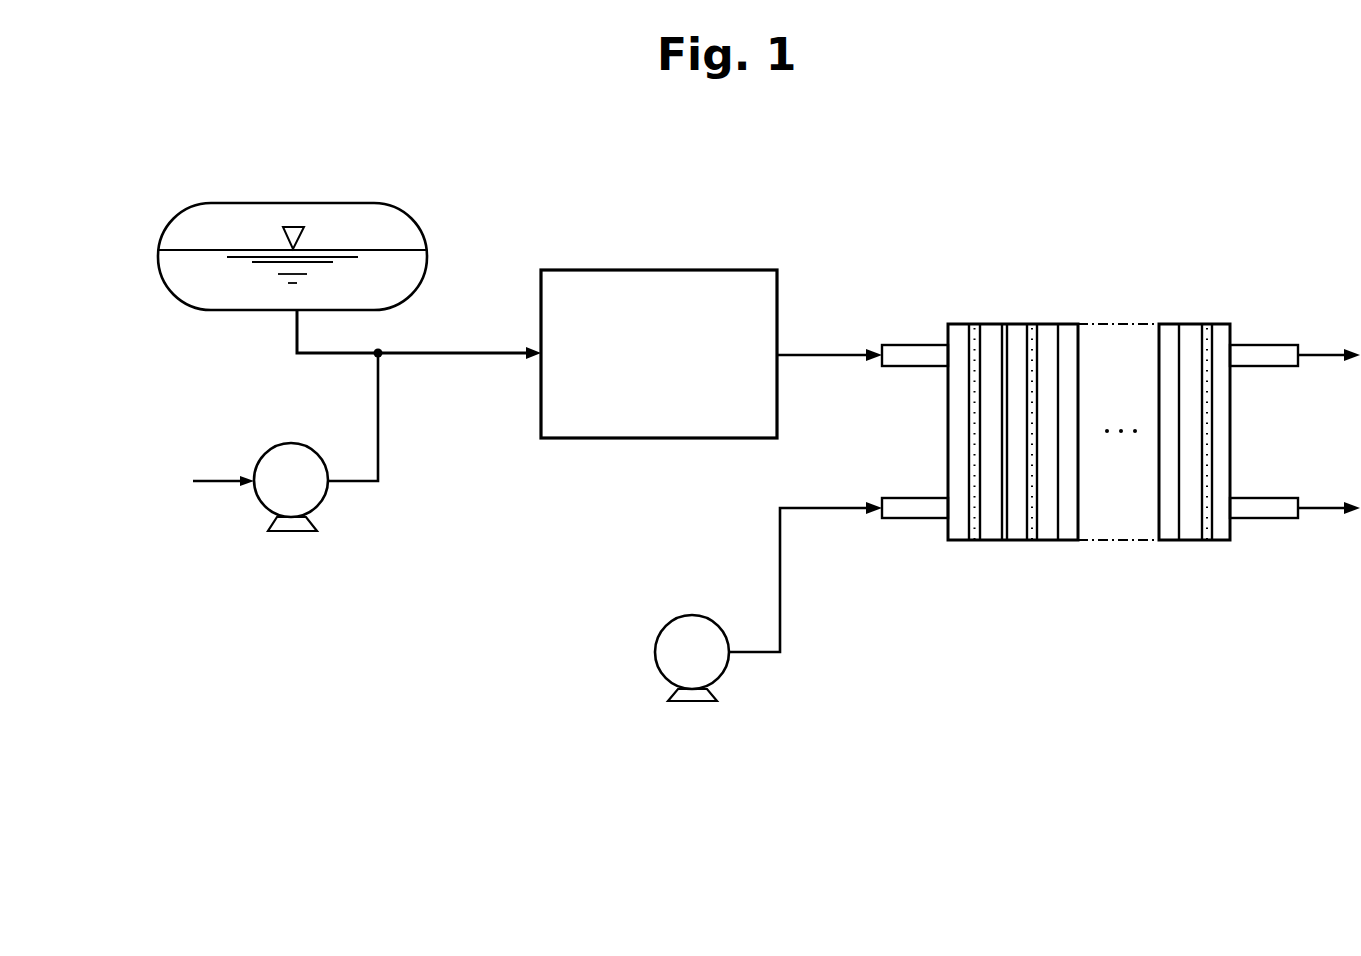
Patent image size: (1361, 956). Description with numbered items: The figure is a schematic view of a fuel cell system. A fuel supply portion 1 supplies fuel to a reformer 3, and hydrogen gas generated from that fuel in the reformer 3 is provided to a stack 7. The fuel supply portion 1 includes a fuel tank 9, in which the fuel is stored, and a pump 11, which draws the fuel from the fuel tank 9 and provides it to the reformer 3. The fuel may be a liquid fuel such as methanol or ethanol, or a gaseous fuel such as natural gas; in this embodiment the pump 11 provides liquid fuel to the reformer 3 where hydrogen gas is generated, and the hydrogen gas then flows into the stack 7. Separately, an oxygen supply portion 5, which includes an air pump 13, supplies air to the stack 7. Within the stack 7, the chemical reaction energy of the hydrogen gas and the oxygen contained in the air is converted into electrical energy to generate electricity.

The fuel supply portion 1 is at (120, 259).
The reformer 3 is at (648, 270).
The oxygen supply portion 5 is at (644, 620).
The stack 7 is at (1170, 298).
The fuel tank 9 is at (278, 203).
The pump 11 is at (309, 444).
The air pump 13 is at (707, 616).